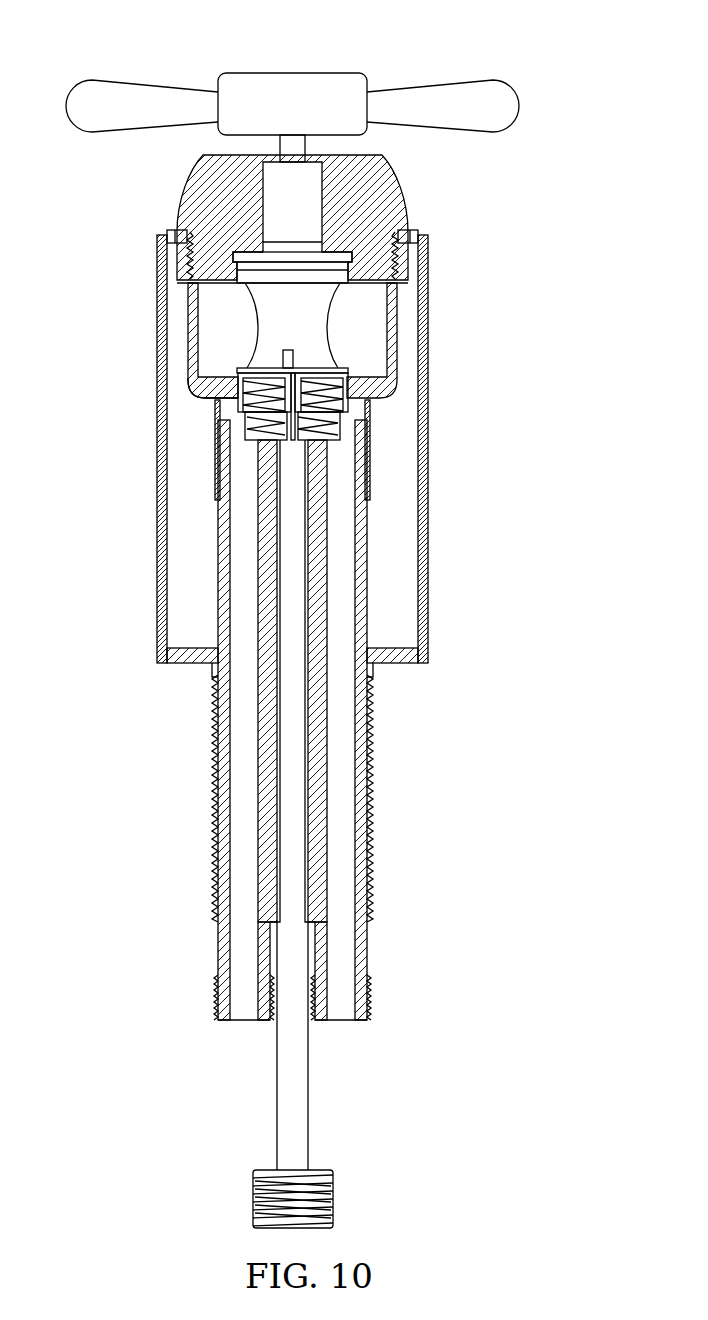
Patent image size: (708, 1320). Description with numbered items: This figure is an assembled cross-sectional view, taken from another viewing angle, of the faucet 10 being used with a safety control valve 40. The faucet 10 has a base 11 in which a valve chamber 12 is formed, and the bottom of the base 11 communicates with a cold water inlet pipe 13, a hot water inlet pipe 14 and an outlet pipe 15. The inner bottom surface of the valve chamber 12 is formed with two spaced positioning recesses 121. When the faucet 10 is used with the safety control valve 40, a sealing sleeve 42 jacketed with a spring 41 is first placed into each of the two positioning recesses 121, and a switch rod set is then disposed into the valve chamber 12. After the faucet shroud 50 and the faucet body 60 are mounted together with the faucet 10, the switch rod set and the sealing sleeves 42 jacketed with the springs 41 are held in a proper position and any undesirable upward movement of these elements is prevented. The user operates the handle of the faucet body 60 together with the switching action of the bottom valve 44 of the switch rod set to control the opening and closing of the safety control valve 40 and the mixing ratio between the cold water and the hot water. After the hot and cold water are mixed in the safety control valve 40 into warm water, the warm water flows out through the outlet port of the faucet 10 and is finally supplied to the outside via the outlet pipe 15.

The faucet 10 is at (402, 393).
The base 11 is at (183, 275).
The valve chamber 12 is at (400, 295).
The positioning recesses 121 is at (190, 387).
The cold water inlet pipe 13 is at (347, 847).
The hot water inlet pipe 14 is at (250, 860).
The outlet pipe 15 is at (297, 1090).
The safety control valve 40 is at (353, 257).
The spring 41 is at (220, 415).
The sealing sleeve 42 is at (243, 370).
The bottom valve 44 is at (342, 364).
The faucet shroud 50 is at (211, 146).
The faucet body 60 is at (439, 545).